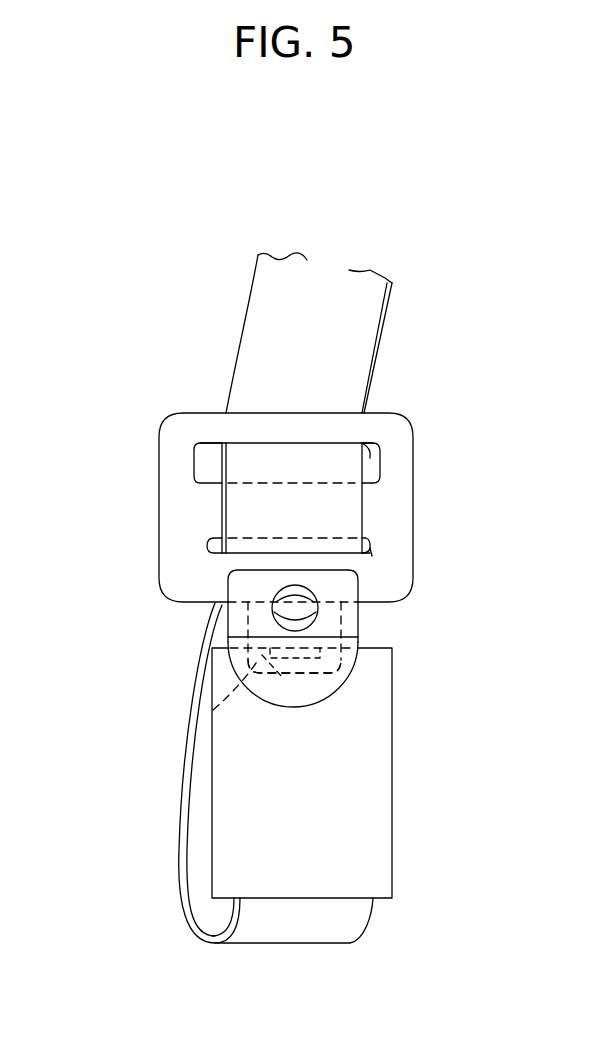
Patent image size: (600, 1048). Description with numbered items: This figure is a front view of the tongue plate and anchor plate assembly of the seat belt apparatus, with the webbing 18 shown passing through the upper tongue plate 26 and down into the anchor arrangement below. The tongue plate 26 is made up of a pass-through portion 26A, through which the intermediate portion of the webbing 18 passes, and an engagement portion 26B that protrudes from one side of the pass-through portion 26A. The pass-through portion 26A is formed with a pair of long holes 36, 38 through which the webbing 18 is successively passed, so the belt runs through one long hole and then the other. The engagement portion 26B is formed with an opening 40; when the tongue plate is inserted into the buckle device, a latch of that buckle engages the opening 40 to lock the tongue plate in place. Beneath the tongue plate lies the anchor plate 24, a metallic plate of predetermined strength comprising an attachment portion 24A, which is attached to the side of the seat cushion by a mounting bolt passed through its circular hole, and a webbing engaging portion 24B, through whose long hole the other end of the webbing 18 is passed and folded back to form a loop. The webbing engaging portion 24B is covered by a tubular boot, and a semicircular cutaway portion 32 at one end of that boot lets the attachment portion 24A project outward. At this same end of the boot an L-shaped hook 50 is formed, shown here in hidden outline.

The webbing 18 is at (358, 325).
The tongue plate 26 is at (281, 651).
The pass-through portion 26A is at (281, 507).
The engagement portion 26B is at (213, 707).
The long hole 36 is at (380, 458).
The long hole 38 is at (370, 557).
The opening 40 is at (308, 608).
The anchor plate 24 is at (399, 636).
The attachment portion 24A is at (366, 635).
The webbing engaging portion 24B is at (335, 700).
The semicircular cutaway portion 32 is at (330, 700).
The L-shaped hook 50 is at (283, 678).